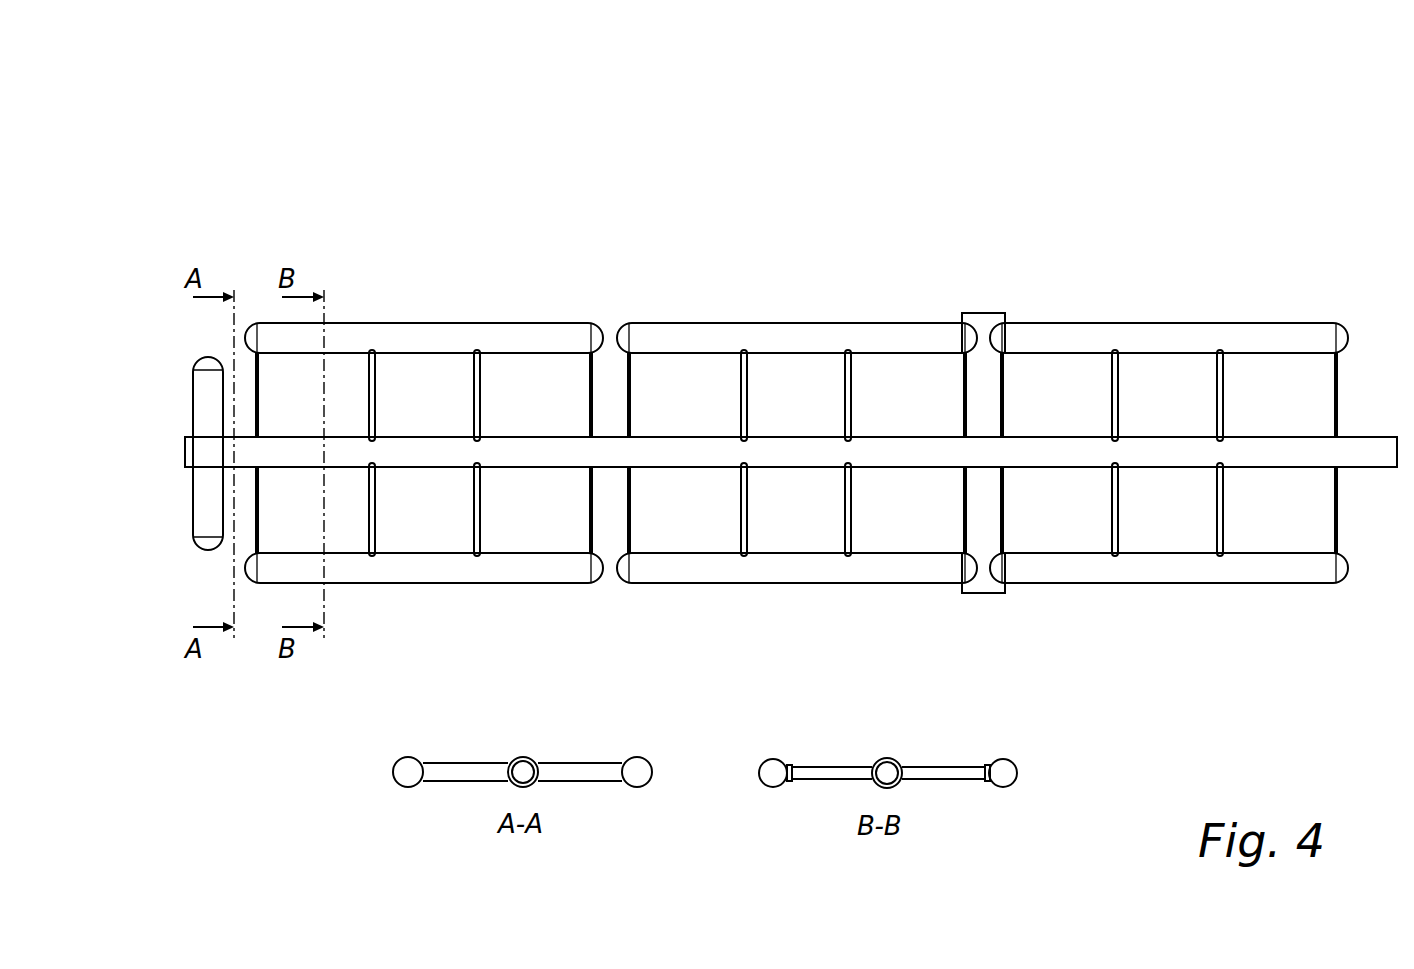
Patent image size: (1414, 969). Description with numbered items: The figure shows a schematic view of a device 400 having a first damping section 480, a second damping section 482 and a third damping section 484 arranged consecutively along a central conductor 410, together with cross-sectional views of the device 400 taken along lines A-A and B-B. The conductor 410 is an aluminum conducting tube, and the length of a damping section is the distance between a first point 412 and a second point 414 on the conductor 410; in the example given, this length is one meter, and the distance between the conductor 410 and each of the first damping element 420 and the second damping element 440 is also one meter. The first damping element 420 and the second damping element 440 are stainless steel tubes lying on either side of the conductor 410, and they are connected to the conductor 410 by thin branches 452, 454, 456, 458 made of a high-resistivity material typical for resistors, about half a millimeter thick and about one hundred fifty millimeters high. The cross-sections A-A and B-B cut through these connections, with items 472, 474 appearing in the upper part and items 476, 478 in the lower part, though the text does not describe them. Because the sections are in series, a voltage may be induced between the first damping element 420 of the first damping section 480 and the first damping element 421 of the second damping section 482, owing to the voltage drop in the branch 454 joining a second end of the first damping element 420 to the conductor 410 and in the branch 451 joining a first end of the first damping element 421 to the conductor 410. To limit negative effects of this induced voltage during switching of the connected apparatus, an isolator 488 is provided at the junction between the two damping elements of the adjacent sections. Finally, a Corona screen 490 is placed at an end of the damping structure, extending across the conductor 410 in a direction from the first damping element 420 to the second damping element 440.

The device 400 is at (1008, 112).
The conductor 410 is at (528, 762).
The first point 412 is at (263, 452).
The second point 414 is at (598, 448).
The first damping element 420 is at (560, 338).
The first damping element 421 is at (908, 332).
The second damping element 440 is at (573, 572).
The branch 451 is at (632, 368).
The branch 452 is at (290, 397).
The branch 454 is at (589, 393).
The branch 456 is at (293, 510).
The branch 458 is at (588, 505).
The first rung 472 is at (376, 403).
The second rung 474 is at (480, 393).
The third rung 476 is at (375, 512).
The fourth rung 478 is at (477, 522).
The first damping section 480 is at (497, 242).
The second damping section 482 is at (877, 242).
The third damping section 484 is at (1197, 242).
The isolator 488 is at (985, 318).
The Corona screen 490 is at (203, 497).